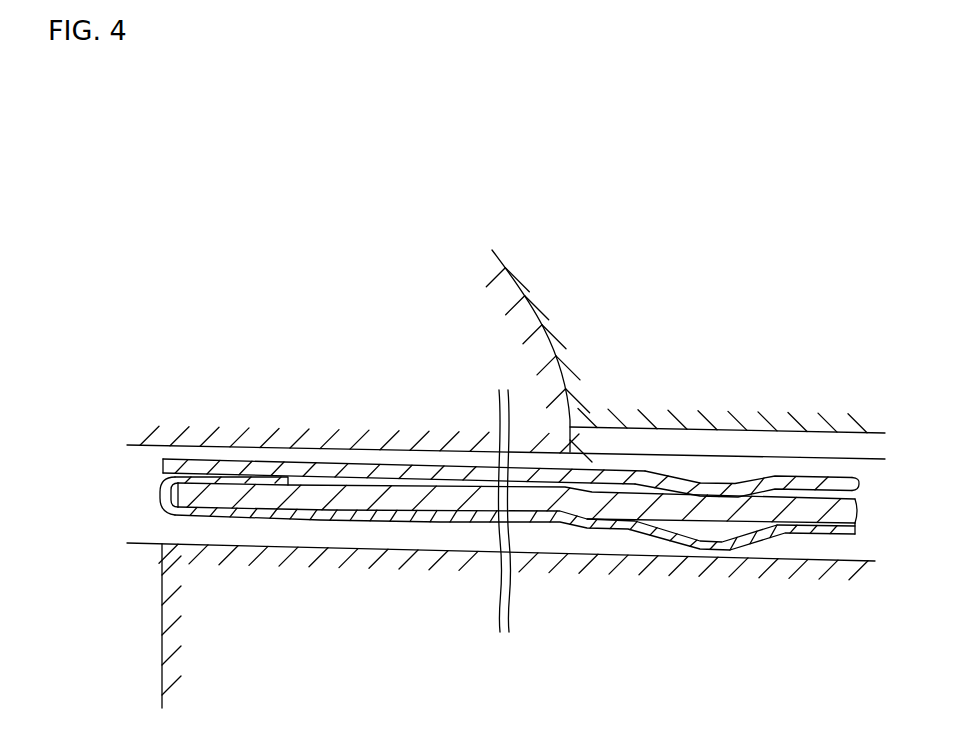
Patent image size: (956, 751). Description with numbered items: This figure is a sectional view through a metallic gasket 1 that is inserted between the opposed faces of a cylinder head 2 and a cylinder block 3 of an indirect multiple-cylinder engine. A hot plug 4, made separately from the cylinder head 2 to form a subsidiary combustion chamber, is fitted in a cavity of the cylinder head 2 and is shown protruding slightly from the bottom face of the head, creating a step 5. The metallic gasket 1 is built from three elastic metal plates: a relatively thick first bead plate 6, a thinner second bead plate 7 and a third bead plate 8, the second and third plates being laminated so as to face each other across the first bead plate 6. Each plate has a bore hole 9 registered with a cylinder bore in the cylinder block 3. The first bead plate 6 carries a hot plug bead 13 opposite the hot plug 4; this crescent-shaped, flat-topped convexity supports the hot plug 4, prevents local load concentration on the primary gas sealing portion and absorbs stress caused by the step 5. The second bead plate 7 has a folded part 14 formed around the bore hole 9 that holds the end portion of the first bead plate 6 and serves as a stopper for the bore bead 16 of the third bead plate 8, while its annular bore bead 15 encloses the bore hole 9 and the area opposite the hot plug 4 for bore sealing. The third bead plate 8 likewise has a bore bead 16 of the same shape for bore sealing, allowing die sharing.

The metallic gasket 1 is at (647, 442).
The cylinder head 2 is at (747, 369).
The cylinder block 3 is at (354, 688).
The hot plug 4 is at (289, 341).
The step 5 is at (575, 440).
The first bead plate 6 is at (810, 512).
The second bead plate 7 is at (847, 537).
The third bead plate 8 is at (846, 457).
The bore hole 9 is at (148, 492).
The hot plug bead 13 is at (408, 476).
The folded part 14 is at (244, 480).
The annular bore bead 15 is at (708, 545).
The bore bead 16 is at (735, 480).